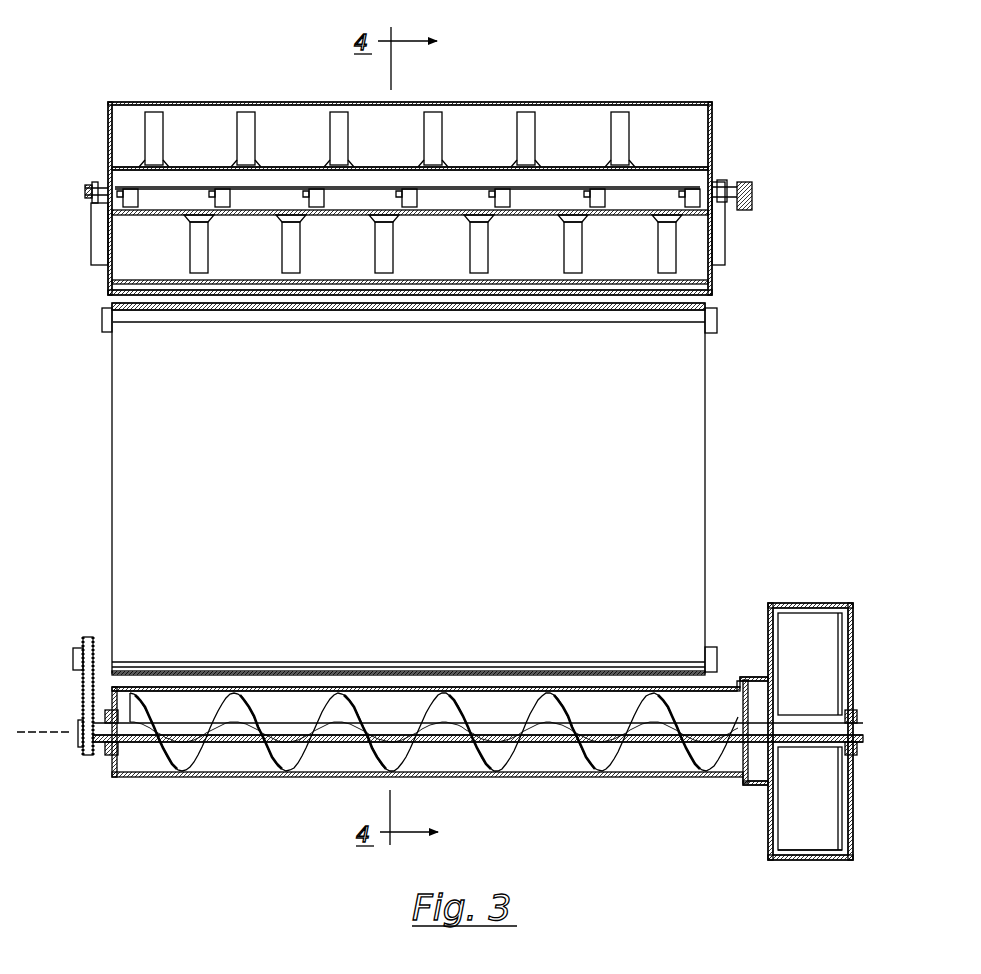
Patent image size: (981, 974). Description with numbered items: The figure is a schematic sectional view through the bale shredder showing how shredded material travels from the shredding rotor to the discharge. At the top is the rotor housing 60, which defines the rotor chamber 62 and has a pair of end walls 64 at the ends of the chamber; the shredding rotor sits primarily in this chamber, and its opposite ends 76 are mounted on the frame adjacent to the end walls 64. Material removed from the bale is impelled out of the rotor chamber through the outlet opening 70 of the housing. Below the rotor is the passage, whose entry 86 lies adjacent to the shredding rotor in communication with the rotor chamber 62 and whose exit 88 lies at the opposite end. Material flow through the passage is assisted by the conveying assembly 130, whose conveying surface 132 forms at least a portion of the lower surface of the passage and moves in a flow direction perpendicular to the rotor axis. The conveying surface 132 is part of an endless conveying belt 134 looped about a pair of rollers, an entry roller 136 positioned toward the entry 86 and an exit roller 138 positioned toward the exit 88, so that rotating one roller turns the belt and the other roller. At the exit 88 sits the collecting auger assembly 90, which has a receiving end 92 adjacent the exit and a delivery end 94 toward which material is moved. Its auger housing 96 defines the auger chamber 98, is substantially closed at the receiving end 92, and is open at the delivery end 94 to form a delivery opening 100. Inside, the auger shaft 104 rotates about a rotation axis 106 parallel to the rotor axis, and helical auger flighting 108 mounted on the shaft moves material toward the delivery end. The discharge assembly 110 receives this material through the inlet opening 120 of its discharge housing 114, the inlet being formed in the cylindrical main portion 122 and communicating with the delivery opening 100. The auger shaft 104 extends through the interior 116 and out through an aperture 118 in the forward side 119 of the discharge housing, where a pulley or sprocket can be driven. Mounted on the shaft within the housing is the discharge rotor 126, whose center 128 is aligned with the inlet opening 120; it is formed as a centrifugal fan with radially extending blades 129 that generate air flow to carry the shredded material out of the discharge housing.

The rotor housing 60 is at (606, 101).
The rotor chamber 62 is at (672, 137).
The end walls 64 is at (108, 143).
The outlet opening 70 is at (680, 288).
The opposite ends of the rotor 76 is at (112, 213).
The entry of the passage 86 is at (721, 311).
The exit of the passage 88 is at (723, 642).
The collecting auger assembly 90 is at (200, 790).
The receiving end 92 is at (122, 790).
The delivery end 94 is at (720, 785).
The auger housing 96 is at (630, 778).
The auger chamber 98 is at (548, 753).
The delivery opening 100 is at (746, 765).
The auger shaft 104 is at (335, 742).
The rotation axis 106 is at (47, 735).
The auger flighting 108 is at (266, 757).
The discharge assembly 110 is at (843, 592).
The discharge housing 114 is at (853, 843).
The interior of the discharge housing 116 is at (807, 795).
The aperture 118 is at (857, 718).
The forward side of the discharge housing 119 is at (857, 748).
The inlet opening 120 is at (774, 690).
The main portion 122 is at (853, 810).
The discharge rotor 126 is at (842, 705).
The center of the discharge rotor 128 is at (807, 675).
The radially extending blades 129 is at (805, 851).
The conveying assembly 130 is at (713, 372).
The conveying surface 132 is at (432, 487).
The conveying belt 134 is at (650, 430).
The entry roller 136 is at (101, 331).
The exit roller 138 is at (75, 655).